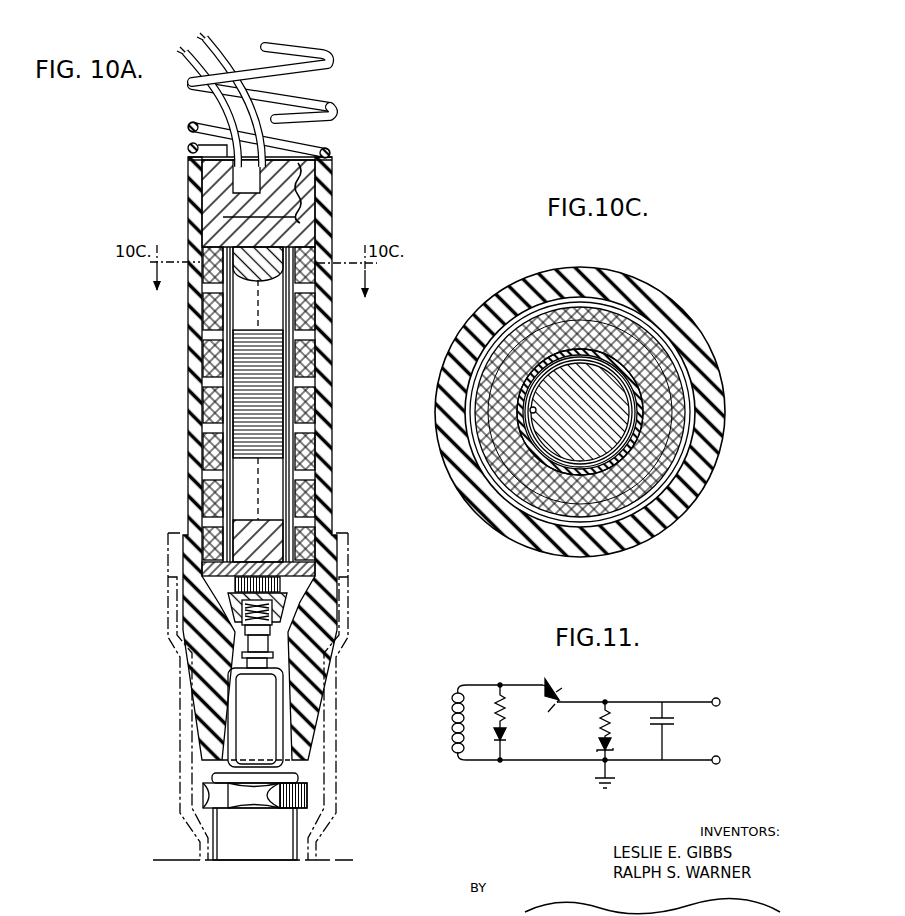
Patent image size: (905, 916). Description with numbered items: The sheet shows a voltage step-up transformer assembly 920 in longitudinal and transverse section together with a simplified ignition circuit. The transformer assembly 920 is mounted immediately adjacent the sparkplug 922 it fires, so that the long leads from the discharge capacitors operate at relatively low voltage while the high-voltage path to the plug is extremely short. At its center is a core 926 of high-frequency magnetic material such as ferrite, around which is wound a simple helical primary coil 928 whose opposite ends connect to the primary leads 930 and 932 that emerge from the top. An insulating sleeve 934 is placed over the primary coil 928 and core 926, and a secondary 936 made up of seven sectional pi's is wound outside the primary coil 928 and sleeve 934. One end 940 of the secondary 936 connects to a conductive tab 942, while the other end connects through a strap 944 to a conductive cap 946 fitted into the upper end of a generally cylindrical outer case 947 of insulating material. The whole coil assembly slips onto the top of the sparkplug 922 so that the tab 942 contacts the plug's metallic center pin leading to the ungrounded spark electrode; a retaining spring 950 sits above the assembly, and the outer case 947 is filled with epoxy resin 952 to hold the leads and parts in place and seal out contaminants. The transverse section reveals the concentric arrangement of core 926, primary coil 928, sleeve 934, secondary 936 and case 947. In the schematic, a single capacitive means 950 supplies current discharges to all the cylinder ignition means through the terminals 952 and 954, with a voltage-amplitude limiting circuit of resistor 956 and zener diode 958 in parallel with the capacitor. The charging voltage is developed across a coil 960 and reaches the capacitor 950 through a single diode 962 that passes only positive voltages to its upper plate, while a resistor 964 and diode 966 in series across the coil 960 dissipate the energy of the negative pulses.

In FIG. 10A, the voltage step-up transformer assembly 920 is at (233, 458).
In FIG. 10C, the voltage step-up transformer assembly 920 is at (580, 395).
In FIG. 10A, the sparkplug 922 is at (272, 842).
In FIG. 10A, the core 926 is at (245, 308).
In FIG. 10C, the core 926 is at (617, 400).
In FIG. 10A, the primary coil 928 is at (204, 418).
In FIG. 10C, the primary coil 928 is at (641, 431).
In FIG. 10A, the primary lead 930 is at (218, 102).
In FIG. 10A, the primary lead 932 is at (228, 50).
In FIG. 10A, the insulating sleeve 934 is at (290, 502).
In FIG. 10C, the insulating sleeve 934 is at (483, 472).
In FIG. 10A, the secondary 936 is at (333, 378).
In FIG. 10C, the secondary 936 is at (508, 335).
In FIG. 10A, the end of the secondary 940 is at (296, 576).
In FIG. 10A, the conductive tab 942 is at (300, 602).
In FIG. 10A, the strap 944 is at (312, 200).
In FIG. 10A, the conductive cap 946 is at (194, 147).
In FIG. 10A, the outer case 947 is at (190, 492).
In FIG. 10C, the outer case 947 is at (630, 281).
In FIG. 10A, the retaining spring / capacitive means 950 is at (274, 90).
In FIG. 11, the retaining spring / capacitive means 950 is at (676, 721).
In FIG. 10A, the epoxy resin / terminal 952 is at (212, 197).
In FIG. 11, the epoxy resin / terminal 952 is at (719, 699).
In FIG. 11, the terminal 954 is at (720, 761).
In FIG. 11, the resistor 956 is at (602, 715).
In FIG. 11, the zener diode 958 is at (600, 745).
In FIG. 11, the coil 960 is at (452, 712).
In FIG. 11, the diode 962 is at (557, 686).
In FIG. 11, the resistor 964 is at (503, 712).
In FIG. 11, the diode 966 is at (504, 739).